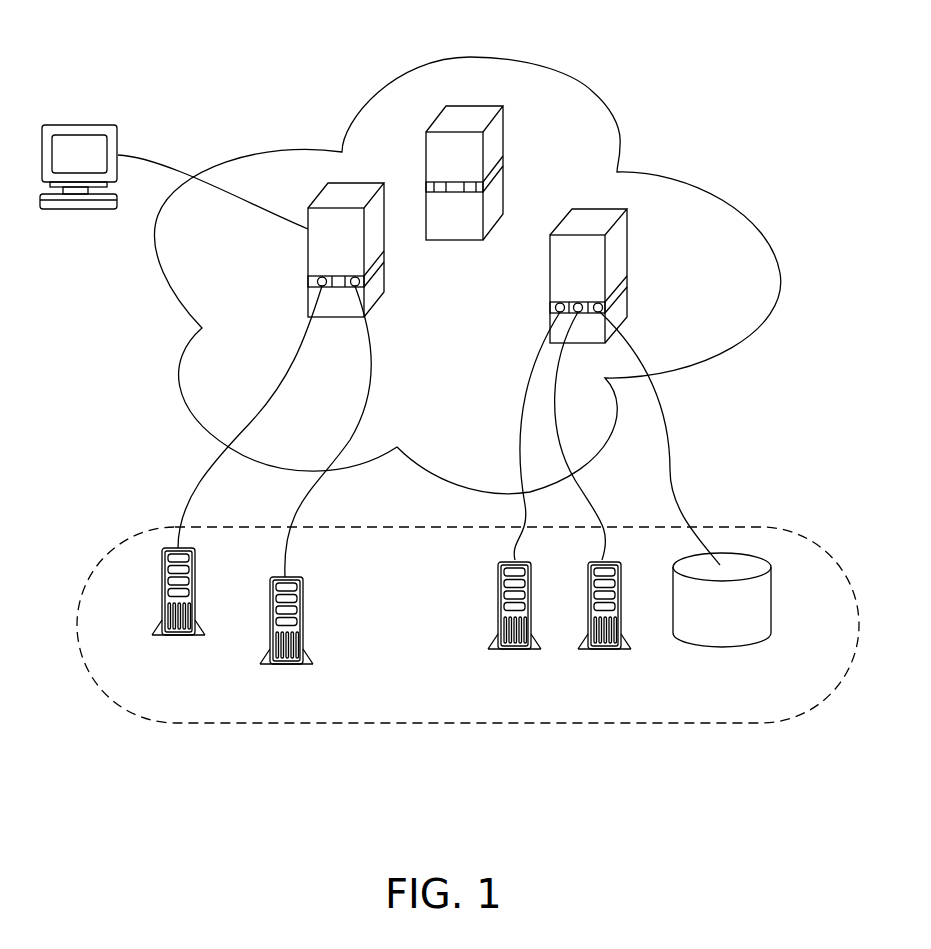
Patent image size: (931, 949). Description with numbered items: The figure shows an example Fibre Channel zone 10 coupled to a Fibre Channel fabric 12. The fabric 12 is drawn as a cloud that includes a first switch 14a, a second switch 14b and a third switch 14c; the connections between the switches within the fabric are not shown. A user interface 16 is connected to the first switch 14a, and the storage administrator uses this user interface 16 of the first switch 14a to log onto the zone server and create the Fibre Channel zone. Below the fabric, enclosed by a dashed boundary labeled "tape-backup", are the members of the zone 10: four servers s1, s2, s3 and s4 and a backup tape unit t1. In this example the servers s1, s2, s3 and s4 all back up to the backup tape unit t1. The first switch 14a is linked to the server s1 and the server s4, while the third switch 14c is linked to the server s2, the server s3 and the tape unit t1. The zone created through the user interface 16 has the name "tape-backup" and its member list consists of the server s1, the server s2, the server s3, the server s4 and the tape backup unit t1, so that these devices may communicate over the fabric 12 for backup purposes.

The Fibre Channel zone 10 is at (565, 718).
The Fibre Channel fabric 12 is at (593, 92).
The first switch 14a is at (354, 245).
The second switch 14b is at (470, 170).
The third switch 14c is at (593, 273).
The user interface 16 is at (118, 132).
The server s1 is at (178, 607).
The server s2 is at (514, 624).
The server s3 is at (604, 624).
The server s4 is at (286, 640).
The backup tape unit t1 is at (722, 613).